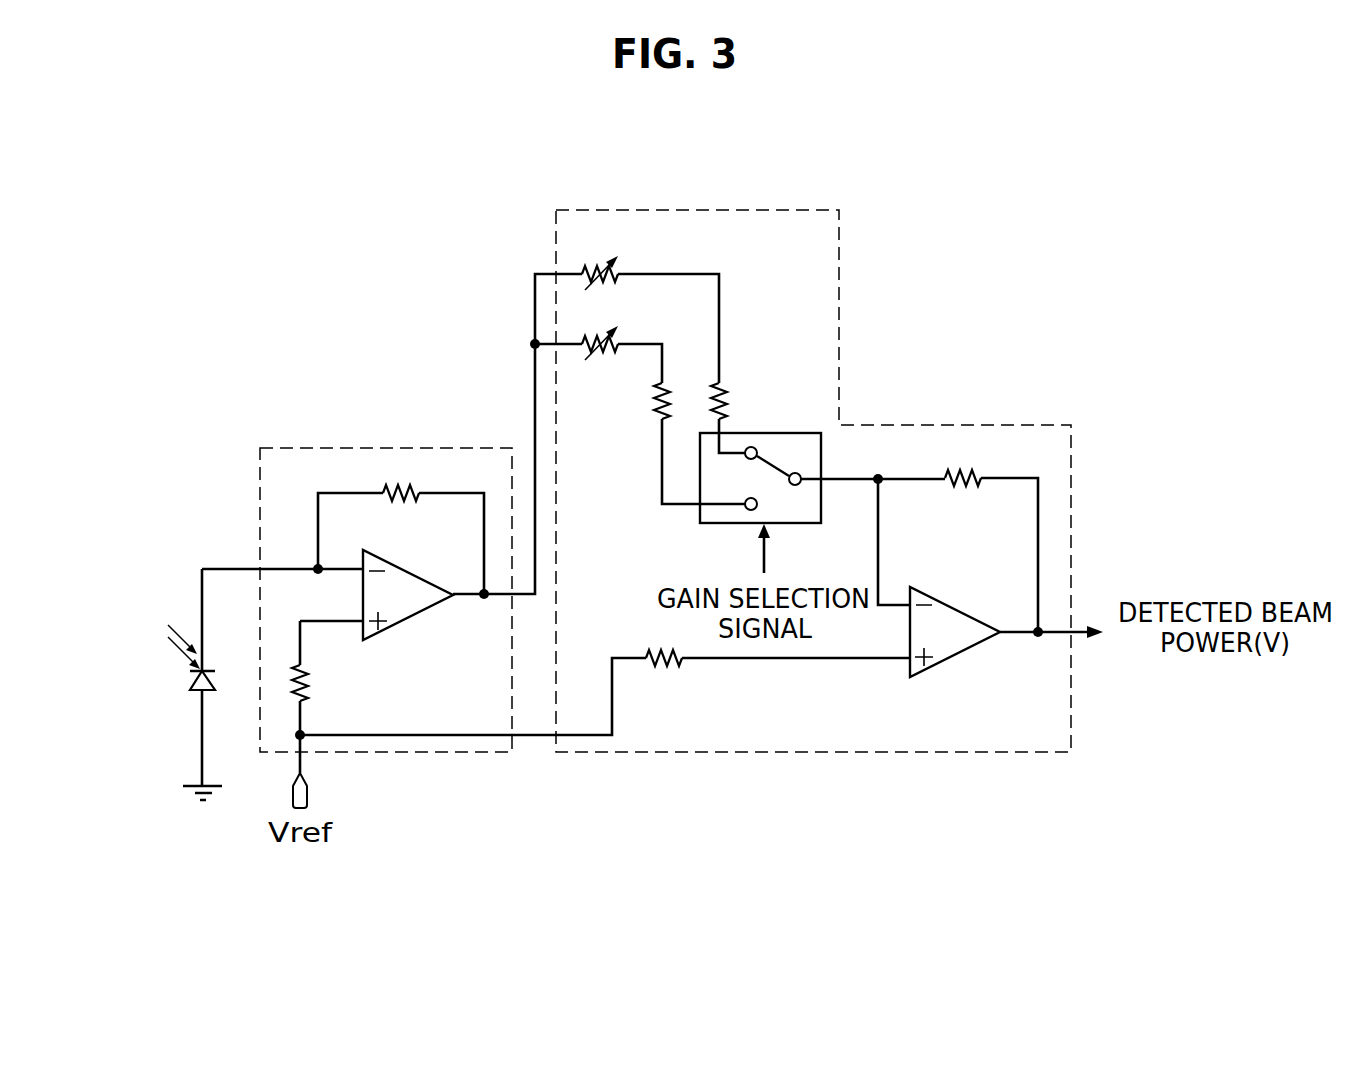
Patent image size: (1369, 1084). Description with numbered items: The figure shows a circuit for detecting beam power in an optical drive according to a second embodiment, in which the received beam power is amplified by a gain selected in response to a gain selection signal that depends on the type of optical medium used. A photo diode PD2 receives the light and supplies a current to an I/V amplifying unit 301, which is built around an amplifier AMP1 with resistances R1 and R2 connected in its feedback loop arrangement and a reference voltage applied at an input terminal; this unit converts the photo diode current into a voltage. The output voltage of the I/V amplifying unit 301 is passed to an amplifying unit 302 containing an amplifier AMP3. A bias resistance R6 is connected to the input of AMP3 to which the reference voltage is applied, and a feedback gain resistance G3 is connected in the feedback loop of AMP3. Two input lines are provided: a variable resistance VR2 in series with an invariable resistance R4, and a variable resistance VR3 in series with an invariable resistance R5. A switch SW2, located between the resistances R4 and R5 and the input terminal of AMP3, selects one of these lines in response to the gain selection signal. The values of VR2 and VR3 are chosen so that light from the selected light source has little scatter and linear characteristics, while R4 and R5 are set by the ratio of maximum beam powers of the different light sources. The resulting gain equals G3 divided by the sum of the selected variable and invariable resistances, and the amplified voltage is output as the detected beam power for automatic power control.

The I/V amplifying unit 301 is at (375, 448).
The amplifying unit 302 is at (687, 210).
The photo diode PD2 is at (172, 684).
The amplifier AMP1 is at (408, 595).
The resistance R1 is at (321, 684).
The resistance R2 is at (400, 478).
The variable resistance VR2 is at (599, 329).
The variable resistance VR3 is at (599, 259).
The invariable resistance R4 is at (640, 401).
The invariable resistance R5 is at (739, 401).
The bias resistance R6 is at (663, 675).
The switch SW2 is at (727, 487).
The feedback gain resistance G3 is at (962, 462).
The amplifier AMP3 is at (955, 632).